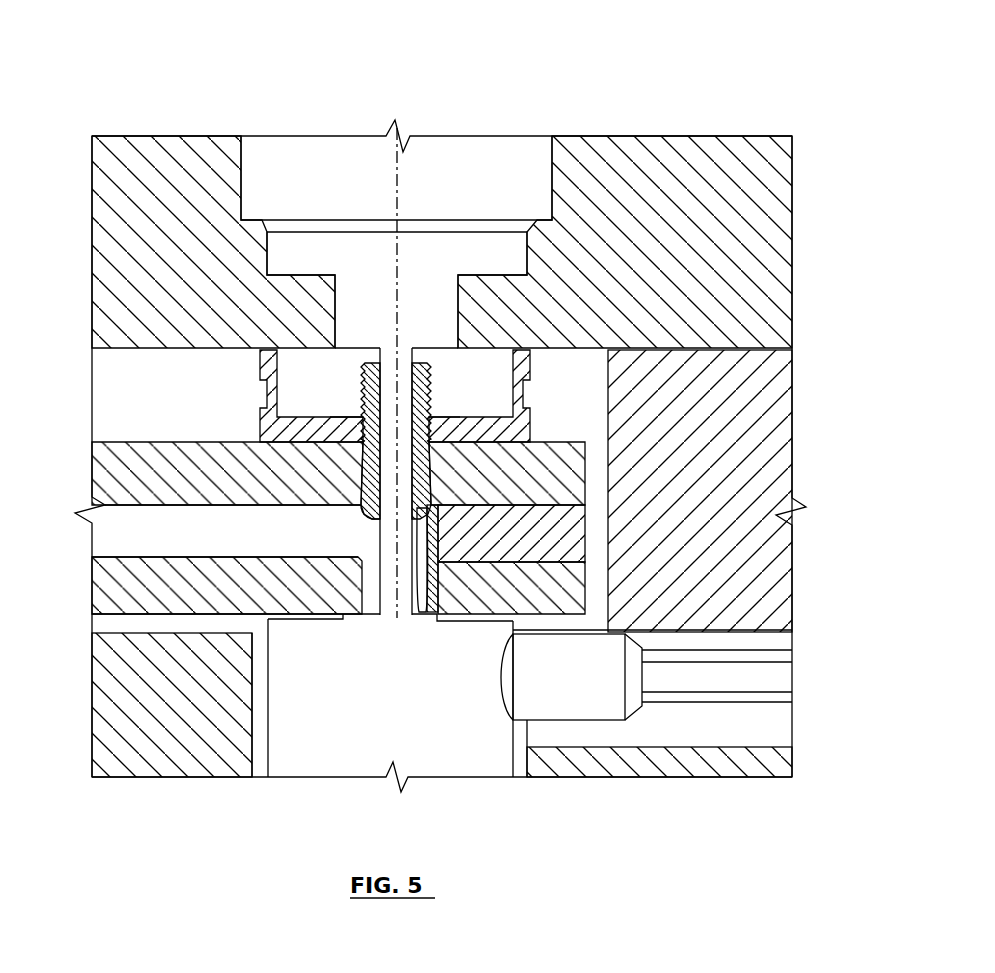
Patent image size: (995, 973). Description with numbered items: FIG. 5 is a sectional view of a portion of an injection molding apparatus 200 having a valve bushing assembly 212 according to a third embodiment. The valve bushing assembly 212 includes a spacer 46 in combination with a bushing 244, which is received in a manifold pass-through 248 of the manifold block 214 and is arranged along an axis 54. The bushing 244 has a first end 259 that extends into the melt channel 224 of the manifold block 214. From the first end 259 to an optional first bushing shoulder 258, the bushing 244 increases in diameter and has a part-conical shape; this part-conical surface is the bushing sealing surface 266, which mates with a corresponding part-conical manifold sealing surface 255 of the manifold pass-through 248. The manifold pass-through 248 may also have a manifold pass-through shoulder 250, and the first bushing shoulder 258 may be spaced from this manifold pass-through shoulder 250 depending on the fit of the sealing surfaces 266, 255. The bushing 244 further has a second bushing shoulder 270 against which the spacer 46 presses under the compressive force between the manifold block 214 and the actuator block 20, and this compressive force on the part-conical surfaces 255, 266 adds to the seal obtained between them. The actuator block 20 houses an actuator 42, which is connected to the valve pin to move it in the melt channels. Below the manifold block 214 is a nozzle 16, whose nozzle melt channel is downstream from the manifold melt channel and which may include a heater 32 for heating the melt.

The injection molding apparatus 200 is at (486, 100).
The actuator block 20 is at (684, 148).
The actuator 42 is at (535, 148).
The valve bushing assembly 212 is at (404, 338).
The spacer 46 is at (266, 432).
The manifold pass-through 248 is at (367, 382).
The bushing 244 is at (430, 382).
The manifold sealing surface 255 is at (360, 438).
The second bushing shoulder 270 is at (446, 438).
The melt channel 224 is at (115, 537).
The manifold block 214 is at (117, 590).
The bushing sealing surface 266 is at (370, 504).
The first end 259 is at (375, 520).
The axis 54 is at (392, 557).
The first bushing shoulder 258 is at (424, 523).
The manifold pass-through shoulder 250 is at (440, 565).
The heater 32 is at (628, 705).
The nozzle 16 is at (452, 770).